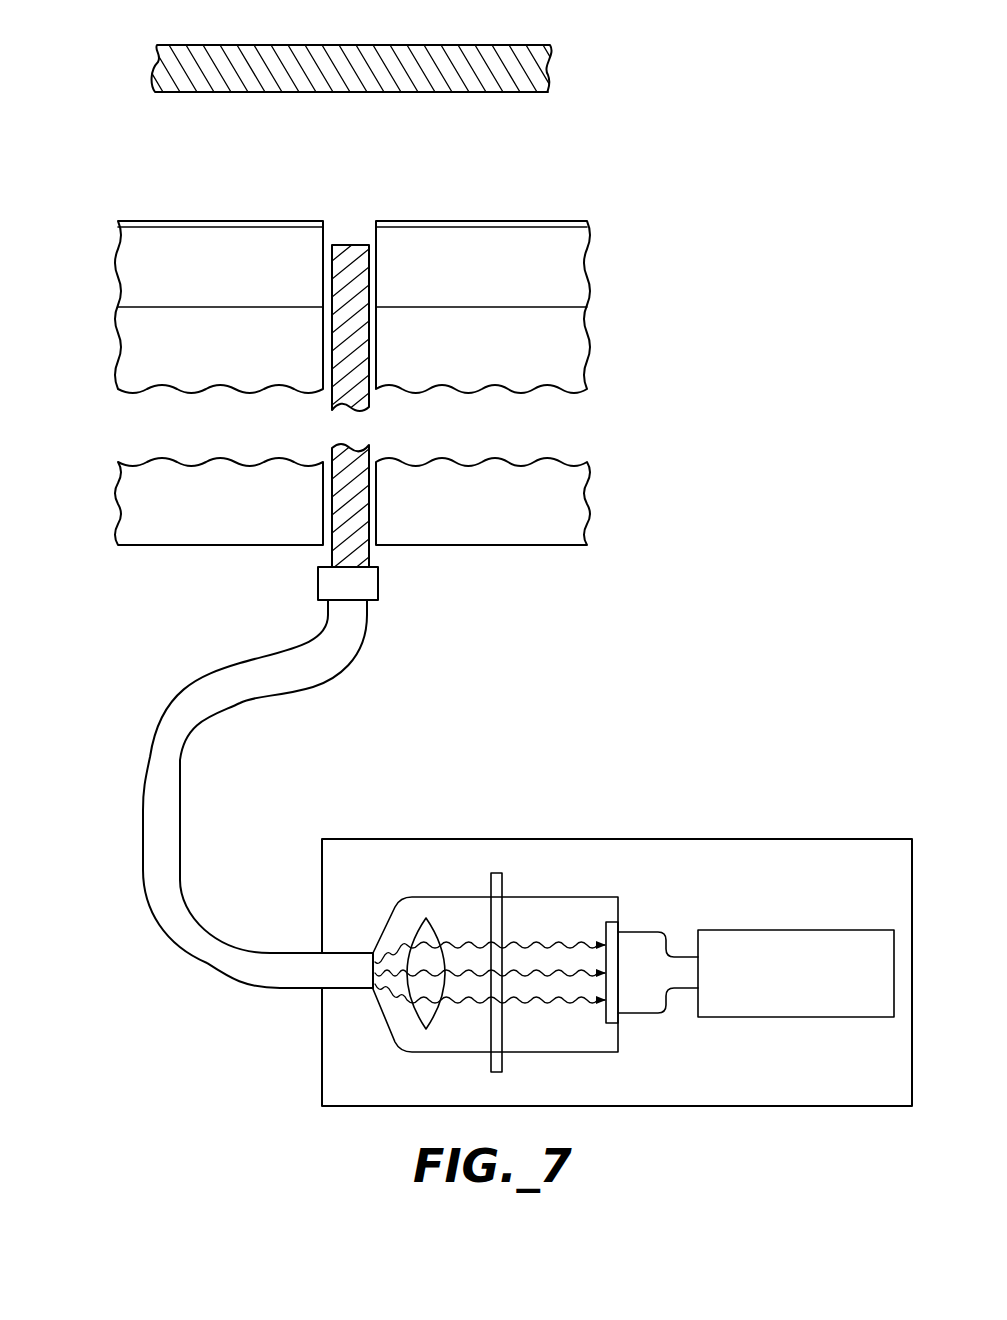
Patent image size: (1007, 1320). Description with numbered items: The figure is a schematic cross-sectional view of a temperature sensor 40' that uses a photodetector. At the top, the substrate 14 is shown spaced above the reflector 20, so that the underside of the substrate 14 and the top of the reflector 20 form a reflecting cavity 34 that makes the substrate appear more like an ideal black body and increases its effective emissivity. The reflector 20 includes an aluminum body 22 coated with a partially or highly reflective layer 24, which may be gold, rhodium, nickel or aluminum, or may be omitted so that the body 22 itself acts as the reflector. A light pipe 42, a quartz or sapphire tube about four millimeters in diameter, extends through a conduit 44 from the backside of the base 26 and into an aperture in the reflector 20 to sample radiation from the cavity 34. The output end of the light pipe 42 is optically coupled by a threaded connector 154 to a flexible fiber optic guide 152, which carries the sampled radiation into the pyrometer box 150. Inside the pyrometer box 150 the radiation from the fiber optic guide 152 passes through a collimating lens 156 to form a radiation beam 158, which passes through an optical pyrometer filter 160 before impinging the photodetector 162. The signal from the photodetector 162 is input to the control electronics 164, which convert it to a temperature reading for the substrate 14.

The substrate 14 is at (548, 77).
The reflecting cavity 34 is at (360, 165).
The reflector 20 is at (414, 283).
The aluminum body 22 is at (575, 270).
The reflective layer 24 is at (517, 221).
The base 26 is at (571, 505).
The conduit 44 is at (378, 475).
The light pipe 42 is at (330, 552).
The threaded connector 154 is at (380, 580).
The fiber optic guide 152 is at (157, 902).
The pyrometer box 150 is at (410, 839).
The collimating lens 156 is at (421, 922).
The radiation beam 158 is at (475, 997).
The optical pyrometer filter 160 is at (502, 880).
The photodetector 162 is at (614, 928).
The control electronics 164 is at (800, 930).
The temperature probe 40' is at (173, 1099).